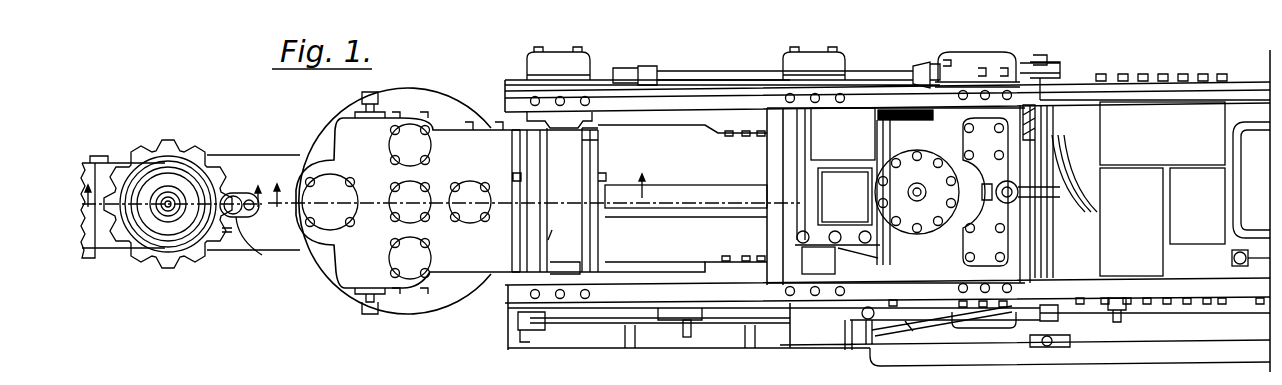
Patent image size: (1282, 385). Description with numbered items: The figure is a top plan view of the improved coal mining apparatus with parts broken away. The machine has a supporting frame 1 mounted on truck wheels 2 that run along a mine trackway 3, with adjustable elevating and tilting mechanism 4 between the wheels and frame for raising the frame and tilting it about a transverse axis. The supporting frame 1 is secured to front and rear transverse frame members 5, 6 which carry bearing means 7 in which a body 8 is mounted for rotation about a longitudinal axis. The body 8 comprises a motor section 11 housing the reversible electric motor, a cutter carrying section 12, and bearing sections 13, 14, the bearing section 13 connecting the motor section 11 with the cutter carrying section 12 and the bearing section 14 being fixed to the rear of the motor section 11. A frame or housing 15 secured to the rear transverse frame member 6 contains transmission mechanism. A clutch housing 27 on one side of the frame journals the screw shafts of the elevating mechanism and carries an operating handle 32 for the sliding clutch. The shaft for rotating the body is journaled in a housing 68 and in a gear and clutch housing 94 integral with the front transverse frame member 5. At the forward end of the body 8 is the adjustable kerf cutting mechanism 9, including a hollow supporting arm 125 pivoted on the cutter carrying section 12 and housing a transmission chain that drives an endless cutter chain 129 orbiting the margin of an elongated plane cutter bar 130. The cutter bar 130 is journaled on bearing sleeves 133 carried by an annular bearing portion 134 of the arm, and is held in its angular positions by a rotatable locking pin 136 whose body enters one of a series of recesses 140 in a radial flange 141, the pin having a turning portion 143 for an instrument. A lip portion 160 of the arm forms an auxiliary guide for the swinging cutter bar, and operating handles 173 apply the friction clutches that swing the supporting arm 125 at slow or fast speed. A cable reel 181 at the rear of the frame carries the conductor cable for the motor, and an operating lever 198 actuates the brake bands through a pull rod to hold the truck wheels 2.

The supporting frame 1 is at (713, 95).
The truck wheels 2 is at (873, 80).
The mine trackway 3 is at (458, 179).
The elevating and tilting mechanism 4 is at (171, 185).
The transverse frame member 5 is at (555, 118).
The transverse frame member 6 is at (853, 115).
The bearing means 7 is at (555, 238).
The body 8 is at (641, 271).
The kerf cutting mechanism 9 is at (418, 88).
The motor section 11 is at (659, 133).
The cutter carrying section 12 is at (455, 140).
The bearing section 13 is at (596, 145).
The bearing section 14 is at (782, 270).
The frame or housing 15 is at (948, 122).
The clutch housing 27 is at (697, 321).
The operating handle 32 is at (687, 338).
The housing 68 is at (801, 58).
The gear and clutch housing 94 is at (553, 62).
The supporting arm 125 is at (242, 158).
The cutter chain 129 is at (98, 156).
The cutter bar 130 is at (94, 242).
The bearing sleeves 133 is at (149, 241).
The annular bearing portion 134 is at (136, 163).
The locking pin 136 is at (244, 233).
The notches or recesses 140 is at (188, 258).
The radial flange 141 is at (224, 244).
The turning portion 143 is at (206, 155).
The lip portion 160 is at (298, 236).
The operating handles 173 is at (362, 98).
The cable reel 181 is at (1258, 144).
The operating lever 198 is at (866, 319).